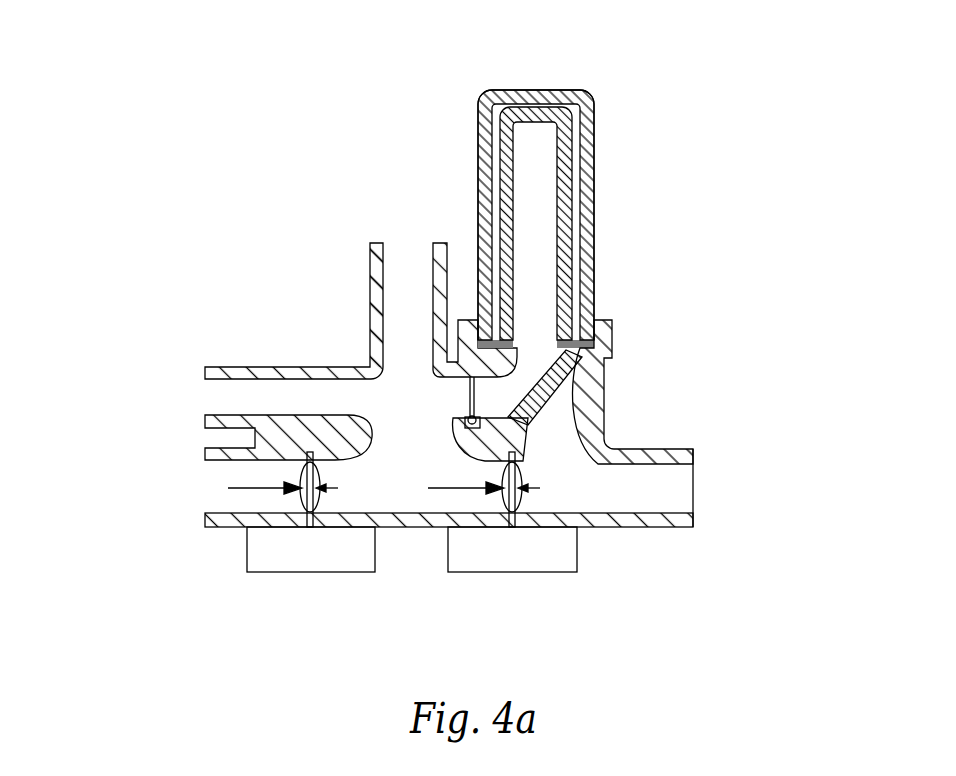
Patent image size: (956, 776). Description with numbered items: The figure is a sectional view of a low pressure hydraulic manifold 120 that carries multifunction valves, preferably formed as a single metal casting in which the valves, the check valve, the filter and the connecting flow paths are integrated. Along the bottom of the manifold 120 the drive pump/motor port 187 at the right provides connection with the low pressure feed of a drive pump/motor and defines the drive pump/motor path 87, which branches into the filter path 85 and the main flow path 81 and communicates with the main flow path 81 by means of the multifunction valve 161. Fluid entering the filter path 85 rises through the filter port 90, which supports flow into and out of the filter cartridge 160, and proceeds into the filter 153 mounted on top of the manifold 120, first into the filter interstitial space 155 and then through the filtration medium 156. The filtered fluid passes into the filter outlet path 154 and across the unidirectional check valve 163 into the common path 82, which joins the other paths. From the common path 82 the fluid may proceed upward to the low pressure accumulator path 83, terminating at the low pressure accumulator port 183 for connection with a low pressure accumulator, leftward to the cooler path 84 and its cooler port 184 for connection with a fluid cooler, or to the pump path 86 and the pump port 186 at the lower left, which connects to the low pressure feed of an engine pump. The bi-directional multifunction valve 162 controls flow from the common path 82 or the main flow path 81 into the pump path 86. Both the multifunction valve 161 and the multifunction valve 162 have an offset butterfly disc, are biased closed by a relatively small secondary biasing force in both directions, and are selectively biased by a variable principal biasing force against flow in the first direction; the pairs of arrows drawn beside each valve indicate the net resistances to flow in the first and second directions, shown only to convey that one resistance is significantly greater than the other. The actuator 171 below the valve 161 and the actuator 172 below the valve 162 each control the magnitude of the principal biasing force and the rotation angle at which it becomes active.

The manifold 120 is at (234, 182).
The filter 153 is at (488, 65).
The filtration medium 156 is at (560, 128).
The filter interstitial space 155 is at (575, 150).
The filter cartridge 160 is at (597, 180).
The filter outlet path 154 is at (535, 350).
The filter port 90 is at (603, 335).
The check valve 163 is at (475, 398).
The filter path 85 is at (558, 428).
The drive pump/motor path 87 is at (660, 487).
The drive pump/motor port 187 is at (690, 520).
The pump path 86 is at (232, 497).
The pump port 186 is at (213, 523).
The cooler path 84 is at (308, 393).
The cooler port 184 is at (228, 375).
The low pressure accumulator port 183 is at (378, 252).
The low pressure accumulator path 83 is at (410, 272).
The main flow path 81 is at (402, 488).
The common path 82 is at (412, 430).
The multifunction valve 162 is at (318, 497).
The multifunction valve 161 is at (522, 497).
The actuator 172 is at (280, 578).
The actuator 171 is at (520, 578).